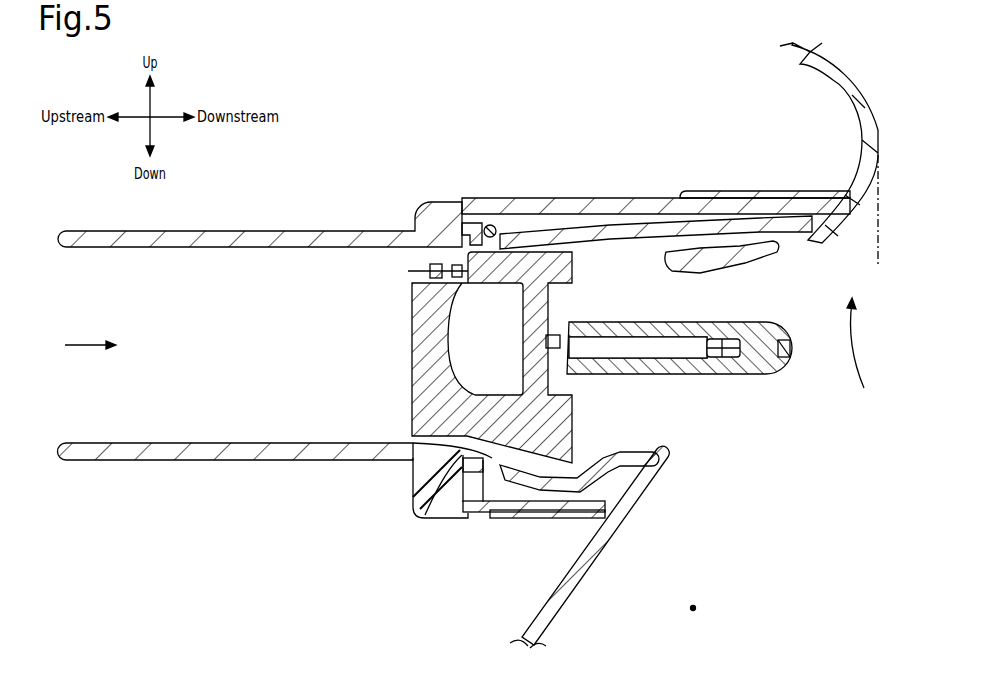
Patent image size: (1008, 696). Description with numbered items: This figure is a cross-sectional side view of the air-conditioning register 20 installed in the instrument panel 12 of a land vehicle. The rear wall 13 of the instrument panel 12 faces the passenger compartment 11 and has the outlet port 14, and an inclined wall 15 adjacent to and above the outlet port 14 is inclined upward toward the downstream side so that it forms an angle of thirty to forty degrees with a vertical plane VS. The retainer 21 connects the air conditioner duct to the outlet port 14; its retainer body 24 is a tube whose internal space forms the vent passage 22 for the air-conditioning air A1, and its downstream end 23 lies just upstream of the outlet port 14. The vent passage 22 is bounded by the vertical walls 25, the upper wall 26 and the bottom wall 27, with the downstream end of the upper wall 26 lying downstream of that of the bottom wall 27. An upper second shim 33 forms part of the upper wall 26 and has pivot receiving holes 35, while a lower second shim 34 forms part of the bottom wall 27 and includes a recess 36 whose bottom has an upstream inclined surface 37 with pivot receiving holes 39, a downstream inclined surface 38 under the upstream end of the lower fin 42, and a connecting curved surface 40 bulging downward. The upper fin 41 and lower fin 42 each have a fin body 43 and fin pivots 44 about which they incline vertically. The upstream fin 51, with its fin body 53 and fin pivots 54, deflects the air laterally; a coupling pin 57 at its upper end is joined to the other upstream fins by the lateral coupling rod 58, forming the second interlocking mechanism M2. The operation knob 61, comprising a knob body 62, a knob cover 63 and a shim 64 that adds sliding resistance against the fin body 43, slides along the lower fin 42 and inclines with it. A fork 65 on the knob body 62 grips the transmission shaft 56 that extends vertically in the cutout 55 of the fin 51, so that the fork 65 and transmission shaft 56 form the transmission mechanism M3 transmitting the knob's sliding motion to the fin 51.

The passenger compartment 11 is at (696, 609).
The instrument panel 12 is at (607, 547).
The rear wall 13 is at (602, 545).
The outlet port 14 is at (668, 455).
The inclined wall 15 is at (852, 184).
The air-conditioning register 20 is at (275, 298).
The retainer 21 is at (260, 212).
The vent passage 22 is at (195, 250).
The downstream end 23 is at (645, 452).
The retainer body 24 is at (256, 234).
The vertical walls 25 is at (158, 250).
The upper wall 26 is at (545, 205).
The bottom wall 27 is at (625, 482).
The upper second shim 33 is at (595, 232).
The lower second shim 34 is at (650, 470).
The pivot receiving holes 35 is at (495, 226).
The recess 36 is at (585, 445).
The upstream inclined surface 37 is at (520, 513).
The downstream inclined surface 38 is at (605, 462).
The pivot receiving holes 39 is at (430, 510).
The curved surface 40 is at (548, 518).
The upper fin 41 is at (708, 255).
The lower fin 42 is at (620, 345).
The fin body 43 is at (674, 257).
The fin pivots 44 is at (745, 272).
The upstream fin 51 is at (435, 357).
The fin body 53 is at (435, 357).
The fin pivots 54 is at (470, 224).
The cutout 55 is at (445, 378).
The transmission shaft 56 is at (512, 320).
The coupling pin 57 is at (430, 270).
The lateral coupling rod 58 is at (436, 278).
The operation knob 61 is at (701, 344).
The knob body 62 is at (701, 344).
The knob cover 63 is at (790, 357).
The shim 64 is at (730, 374).
The fork 65 is at (518, 348).
The air-conditioning air A1 is at (88, 348).
The second interlocking mechanism M2 is at (448, 258).
The transmission mechanism M3 is at (556, 333).
The vertical plane VS is at (873, 343).